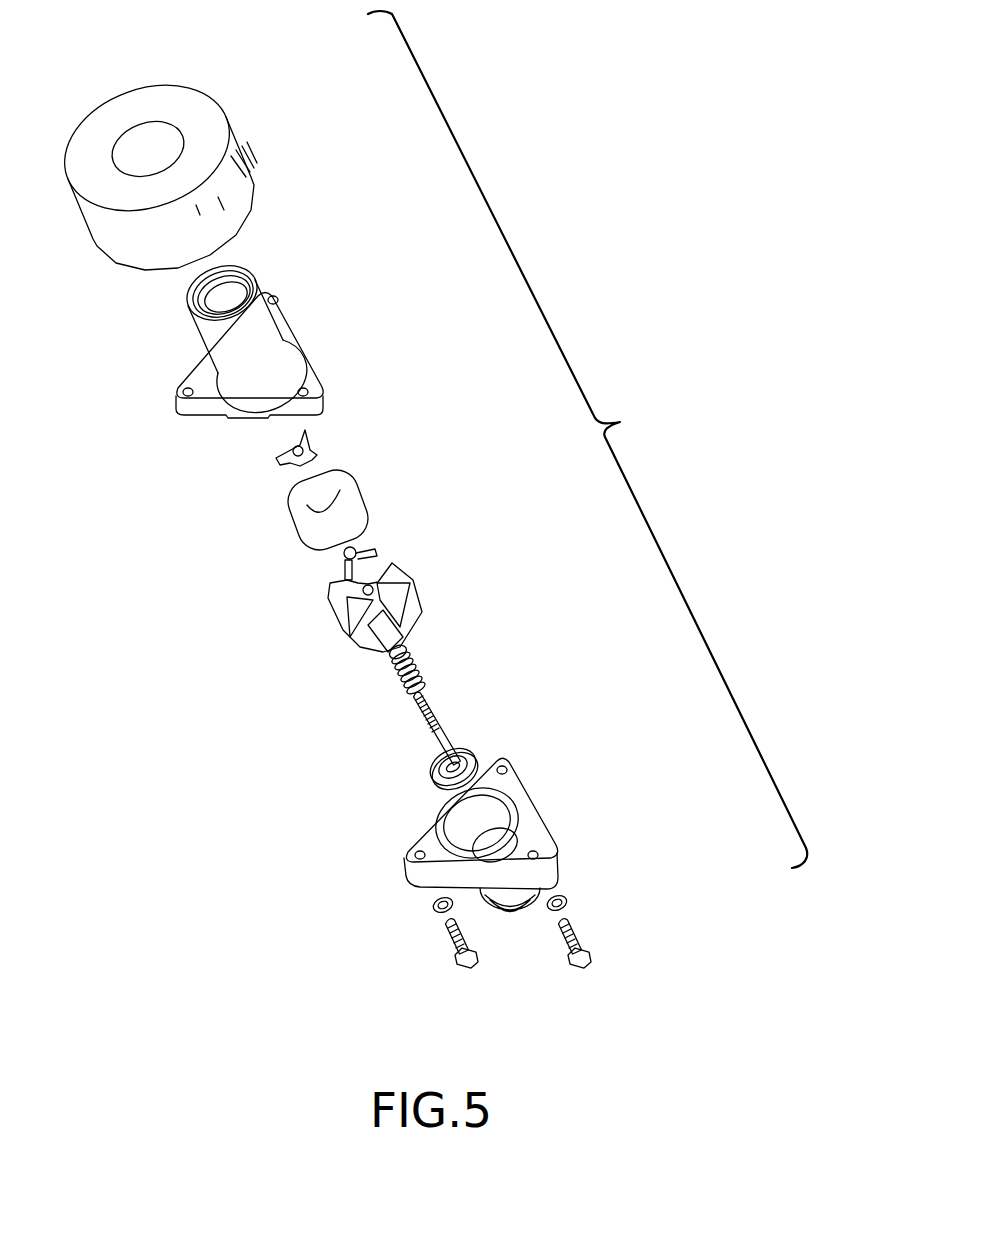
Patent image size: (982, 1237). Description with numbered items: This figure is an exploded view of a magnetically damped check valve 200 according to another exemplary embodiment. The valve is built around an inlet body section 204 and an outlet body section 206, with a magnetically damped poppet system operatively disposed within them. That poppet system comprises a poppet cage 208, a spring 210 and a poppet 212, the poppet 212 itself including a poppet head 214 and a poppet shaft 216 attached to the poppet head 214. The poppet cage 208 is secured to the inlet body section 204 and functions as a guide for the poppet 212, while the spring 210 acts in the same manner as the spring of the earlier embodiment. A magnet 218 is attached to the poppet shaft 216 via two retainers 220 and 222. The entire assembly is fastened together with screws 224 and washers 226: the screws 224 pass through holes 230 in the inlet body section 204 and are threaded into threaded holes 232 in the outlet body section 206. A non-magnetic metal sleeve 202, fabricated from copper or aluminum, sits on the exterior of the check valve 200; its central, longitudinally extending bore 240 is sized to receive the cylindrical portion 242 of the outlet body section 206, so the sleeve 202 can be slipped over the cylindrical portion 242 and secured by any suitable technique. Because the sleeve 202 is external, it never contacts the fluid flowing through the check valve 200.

The magnetically damped check valve 200 is at (587, 439).
The non-magnetic metal sleeve 202 is at (243, 149).
The inlet body section 204 is at (540, 790).
The outlet body section 206 is at (300, 318).
The poppet cage 208 is at (410, 580).
The spring 210 is at (428, 670).
The poppet 212 is at (440, 742).
The poppet head 214 is at (433, 785).
The poppet shaft 216 is at (432, 767).
The magnet 218 is at (373, 497).
The retainer 220 is at (307, 440).
The retainer 222 is at (320, 562).
The screws 224 is at (590, 945).
The washers 226 is at (570, 897).
The holes 230 is at (503, 766).
The threaded holes 232 is at (273, 297).
The bore 240 is at (152, 138).
The cylindrical portion 242 is at (193, 338).